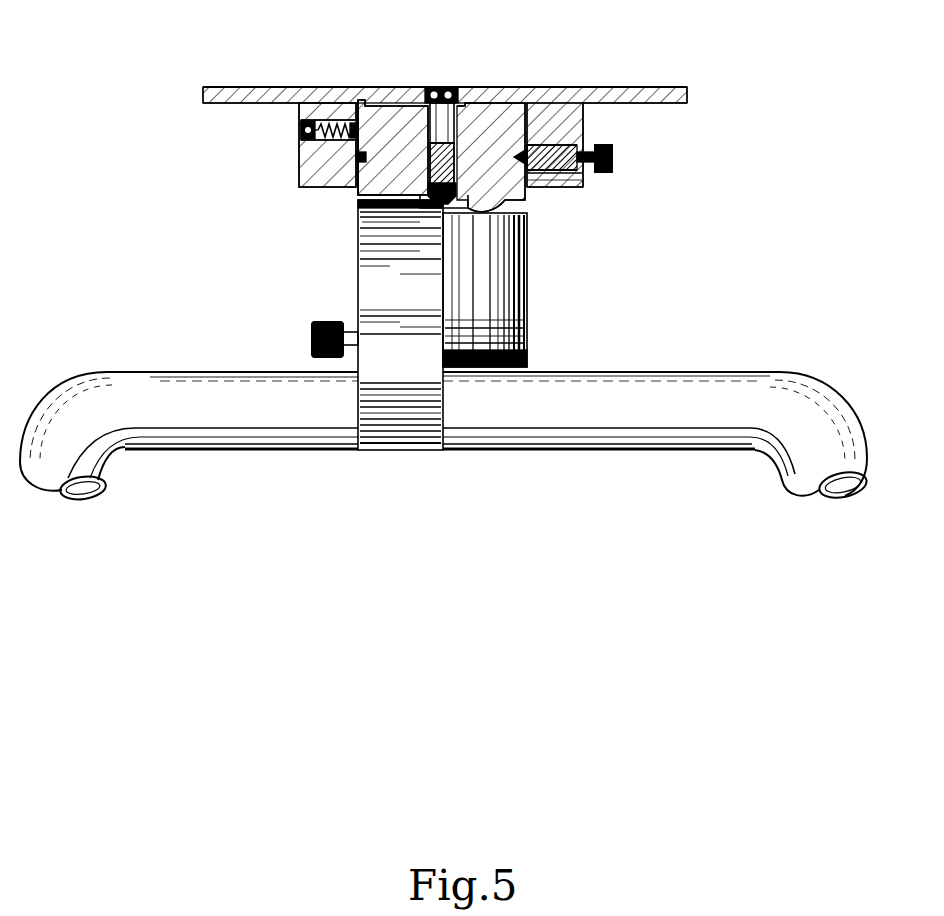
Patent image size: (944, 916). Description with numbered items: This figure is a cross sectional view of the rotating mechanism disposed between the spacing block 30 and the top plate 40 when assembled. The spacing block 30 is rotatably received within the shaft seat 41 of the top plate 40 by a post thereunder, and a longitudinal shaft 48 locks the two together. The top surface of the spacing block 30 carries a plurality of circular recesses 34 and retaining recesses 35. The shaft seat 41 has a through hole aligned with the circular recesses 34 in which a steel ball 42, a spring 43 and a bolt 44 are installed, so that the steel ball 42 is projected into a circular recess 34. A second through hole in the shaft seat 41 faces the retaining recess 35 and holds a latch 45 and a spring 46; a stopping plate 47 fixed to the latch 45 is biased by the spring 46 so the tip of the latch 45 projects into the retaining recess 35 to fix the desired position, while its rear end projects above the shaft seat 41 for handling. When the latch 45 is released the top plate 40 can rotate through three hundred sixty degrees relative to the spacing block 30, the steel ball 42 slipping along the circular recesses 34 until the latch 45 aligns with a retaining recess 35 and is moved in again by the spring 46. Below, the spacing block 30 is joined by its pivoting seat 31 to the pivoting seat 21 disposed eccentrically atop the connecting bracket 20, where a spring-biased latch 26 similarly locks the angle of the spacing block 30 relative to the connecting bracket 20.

The connecting bracket 20 is at (624, 415).
The pivoting seat 21 is at (388, 287).
The latch 26 is at (312, 338).
The spacing block 30 is at (528, 240).
The pivoting seat 31 is at (483, 328).
The circular recesses 34 is at (503, 120).
The retaining recesses 35 is at (357, 198).
The top plate 40 is at (593, 97).
The shaft seat 41 is at (327, 172).
The steel ball 42 is at (360, 100).
The spring 43 is at (332, 121).
The bolt 44 is at (301, 137).
The latch 45 is at (613, 157).
The spring 46 is at (575, 187).
The stopping plate 47 is at (533, 186).
The longitudinal shaft 48 is at (440, 110).